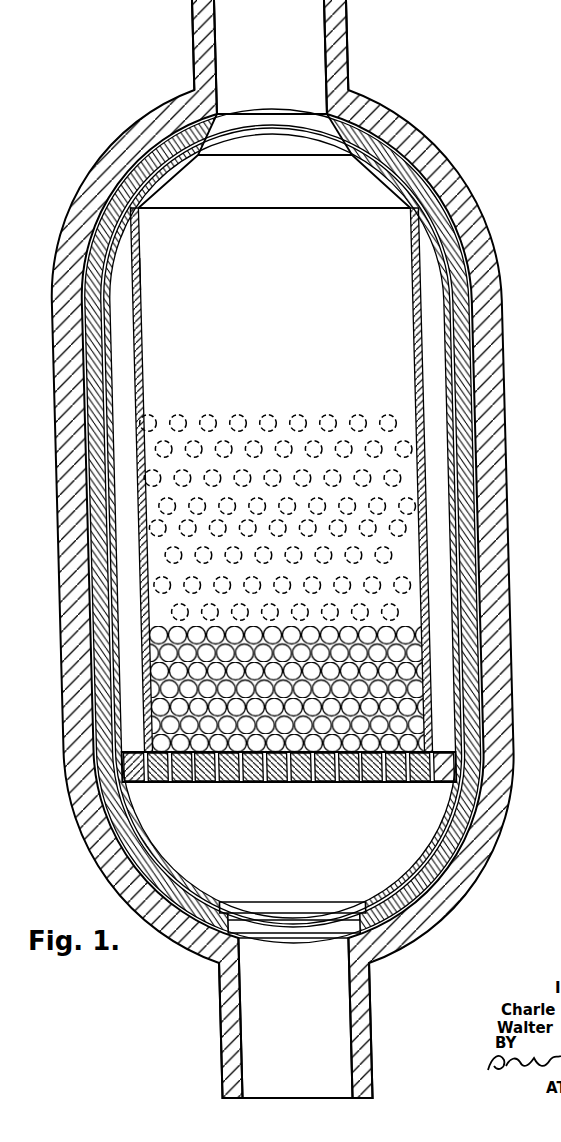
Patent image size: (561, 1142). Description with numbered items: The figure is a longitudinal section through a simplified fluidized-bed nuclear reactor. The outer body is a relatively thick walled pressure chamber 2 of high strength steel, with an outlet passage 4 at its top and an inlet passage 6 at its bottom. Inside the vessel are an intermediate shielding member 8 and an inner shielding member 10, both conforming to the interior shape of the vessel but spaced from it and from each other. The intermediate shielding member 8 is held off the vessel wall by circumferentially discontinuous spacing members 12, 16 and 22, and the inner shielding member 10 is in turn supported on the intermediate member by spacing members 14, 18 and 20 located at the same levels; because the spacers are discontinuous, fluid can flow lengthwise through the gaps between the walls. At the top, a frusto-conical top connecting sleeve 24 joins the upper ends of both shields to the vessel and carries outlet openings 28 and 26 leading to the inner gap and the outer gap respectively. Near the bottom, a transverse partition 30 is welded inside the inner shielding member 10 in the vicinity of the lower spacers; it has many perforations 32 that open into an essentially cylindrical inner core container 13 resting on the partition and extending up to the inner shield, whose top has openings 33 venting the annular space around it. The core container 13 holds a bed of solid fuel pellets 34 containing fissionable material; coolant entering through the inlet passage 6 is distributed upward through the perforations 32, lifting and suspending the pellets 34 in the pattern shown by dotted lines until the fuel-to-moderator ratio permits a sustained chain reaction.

The pressure chamber 2 is at (46, 497).
The outlet passage 4 is at (209, 22).
The inlet passage 6 is at (350, 1013).
The intermediate shielding member 8 is at (470, 558).
The inner shielding member 10 is at (453, 500).
The spacing member 12 is at (480, 760).
The inner core container 13 is at (419, 356).
The spacing member 14 is at (450, 782).
The spacing member 16 is at (472, 292).
The spacing member 18 is at (455, 305).
The spacing member 20 is at (312, 912).
The spacing member 22 is at (339, 945).
The top connecting sleeve 24 is at (296, 145).
The outlet opening 26 is at (340, 117).
The outlet opening 28 is at (356, 147).
The transverse partition 30 is at (337, 781).
The perforations 32 is at (216, 782).
The openings 33 is at (156, 268).
The pellets 34 is at (298, 632).